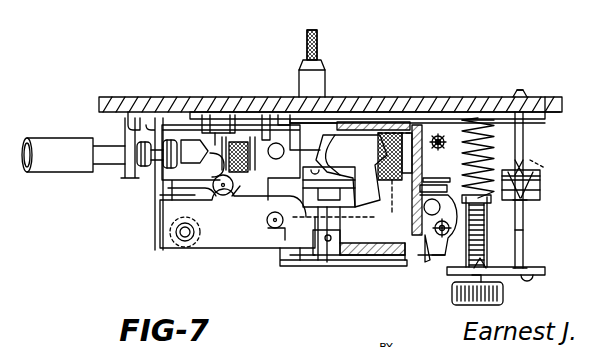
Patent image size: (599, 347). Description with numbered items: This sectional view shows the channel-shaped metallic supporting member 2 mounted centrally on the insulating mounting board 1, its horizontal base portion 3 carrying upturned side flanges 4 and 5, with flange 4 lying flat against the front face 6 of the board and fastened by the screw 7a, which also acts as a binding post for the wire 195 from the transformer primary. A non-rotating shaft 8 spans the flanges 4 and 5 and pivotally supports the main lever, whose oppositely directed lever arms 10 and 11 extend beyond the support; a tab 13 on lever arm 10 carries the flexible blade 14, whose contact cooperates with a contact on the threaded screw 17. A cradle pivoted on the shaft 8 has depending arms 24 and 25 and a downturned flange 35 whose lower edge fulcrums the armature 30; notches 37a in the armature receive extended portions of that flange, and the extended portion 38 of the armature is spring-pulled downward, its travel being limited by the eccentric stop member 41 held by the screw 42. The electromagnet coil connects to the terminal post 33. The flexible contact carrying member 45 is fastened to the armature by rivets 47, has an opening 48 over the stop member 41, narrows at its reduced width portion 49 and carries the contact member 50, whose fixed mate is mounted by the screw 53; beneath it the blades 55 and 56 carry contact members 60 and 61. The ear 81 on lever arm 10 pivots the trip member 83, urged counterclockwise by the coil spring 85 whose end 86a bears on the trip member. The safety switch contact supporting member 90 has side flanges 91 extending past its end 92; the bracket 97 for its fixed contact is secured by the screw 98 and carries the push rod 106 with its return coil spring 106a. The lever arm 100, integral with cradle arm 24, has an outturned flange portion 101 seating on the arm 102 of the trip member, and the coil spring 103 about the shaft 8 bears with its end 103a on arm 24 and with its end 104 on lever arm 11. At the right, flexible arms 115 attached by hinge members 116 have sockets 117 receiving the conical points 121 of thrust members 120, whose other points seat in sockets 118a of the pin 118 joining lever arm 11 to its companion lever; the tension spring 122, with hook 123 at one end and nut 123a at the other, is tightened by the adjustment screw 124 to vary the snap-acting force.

The mounting board 1 is at (106, 99).
The supporting member 2 is at (285, 262).
The base portion 3 is at (312, 263).
The side flange 4 is at (344, 114).
The side flange 5 is at (334, 263).
The front face 6 is at (554, 114).
The screw 7a is at (325, 95).
The shaft 8 is at (397, 266).
The lever arm 10 is at (541, 192).
The lever arm 11 is at (541, 186).
The tab 13 is at (324, 263).
The flexible blade 14 is at (232, 249).
The screw 17 is at (185, 243).
The cradle arm 24 is at (367, 130).
The cradle arm 25 is at (378, 263).
The armature 30 is at (358, 267).
The terminal post 33 is at (450, 256).
The downturned flange 35 is at (419, 110).
The notches 37a is at (432, 258).
The extended portion 38 is at (485, 201).
The stop member 41 is at (354, 186).
The screw 42 is at (353, 201).
The contact carrying member 45 is at (232, 191).
The rivets 47 is at (386, 170).
The opening 48 is at (322, 168).
The reduced width portion 49 is at (270, 207).
The contact member 50 is at (223, 196).
The screw 53 is at (192, 128).
The contact carrying blade 55 is at (300, 140).
The contact carrying blade 56 is at (304, 257).
The contact member 60 is at (273, 140).
The contact member 61 is at (274, 231).
The ear 81 is at (232, 110).
The trip member 83 is at (250, 148).
The coil spring 85 is at (234, 224).
The spring end 86a is at (218, 158).
The contact supporting member 90 is at (201, 124).
The side flanges 91 is at (212, 130).
The end 92 is at (211, 139).
The bracket 97 is at (131, 117).
The screw 98 is at (149, 123).
The lever arm 100 is at (328, 124).
The outturned flange portion 101 is at (258, 122).
The arm 102 is at (238, 125).
The coil spring 103 is at (378, 168).
The spring end 103a is at (398, 131).
The spring end 104 is at (437, 150).
The push rod 106 is at (71, 158).
The coil spring 106a is at (152, 174).
The flexible arms 115 is at (549, 105).
The hinge members 116 is at (441, 122).
The sockets 117 is at (523, 101).
The pin 118 is at (514, 172).
The sockets 118a is at (546, 161).
The thrust members 120 is at (522, 170).
The conical points 121 is at (520, 99).
The tension spring 122 is at (488, 128).
The hook 123 is at (475, 128).
The nut 123a is at (524, 232).
The adjustment screw 124 is at (488, 279).
The wire 195 is at (305, 42).